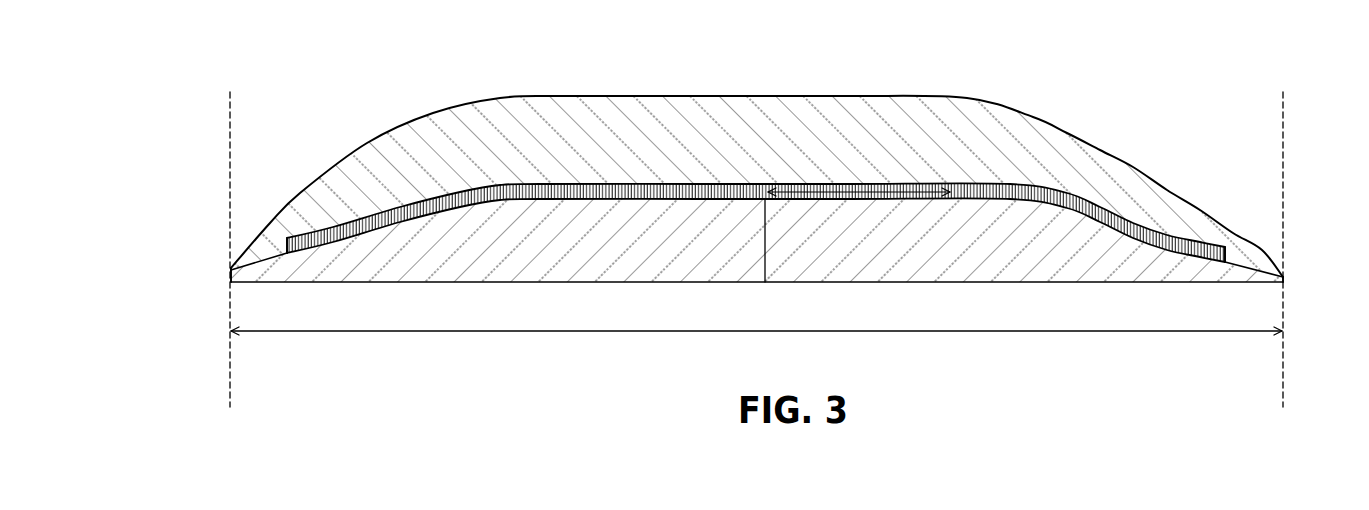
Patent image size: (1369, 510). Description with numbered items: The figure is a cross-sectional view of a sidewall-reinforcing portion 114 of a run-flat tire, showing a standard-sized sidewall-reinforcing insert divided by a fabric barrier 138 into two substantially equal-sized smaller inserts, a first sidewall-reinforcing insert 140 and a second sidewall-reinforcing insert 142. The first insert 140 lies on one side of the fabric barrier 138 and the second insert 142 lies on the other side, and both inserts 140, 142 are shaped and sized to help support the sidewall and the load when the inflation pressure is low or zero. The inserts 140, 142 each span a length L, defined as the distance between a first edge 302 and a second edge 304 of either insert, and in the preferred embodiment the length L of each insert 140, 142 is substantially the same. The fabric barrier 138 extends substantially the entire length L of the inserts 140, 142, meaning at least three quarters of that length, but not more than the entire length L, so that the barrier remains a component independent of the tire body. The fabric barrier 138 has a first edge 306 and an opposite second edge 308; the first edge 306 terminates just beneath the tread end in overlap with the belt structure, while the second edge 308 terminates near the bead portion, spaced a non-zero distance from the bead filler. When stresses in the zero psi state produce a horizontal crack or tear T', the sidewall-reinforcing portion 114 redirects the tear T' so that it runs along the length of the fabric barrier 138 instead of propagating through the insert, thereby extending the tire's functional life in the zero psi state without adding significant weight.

The sidewall-reinforcing portion 114 is at (735, 217).
The fabric barrier 138 is at (980, 183).
The first sidewall-reinforcing insert 140 is at (540, 253).
The second sidewall-reinforcing insert 142 is at (553, 127).
The first edge of insert 302 is at (228, 278).
The second edge of insert 304 is at (1288, 273).
The first edge of fabric barrier 306 is at (1228, 253).
The second edge of fabric barrier 308 is at (285, 242).
The length L is at (527, 333).
The horizontal crack or tear T' is at (721, 162).